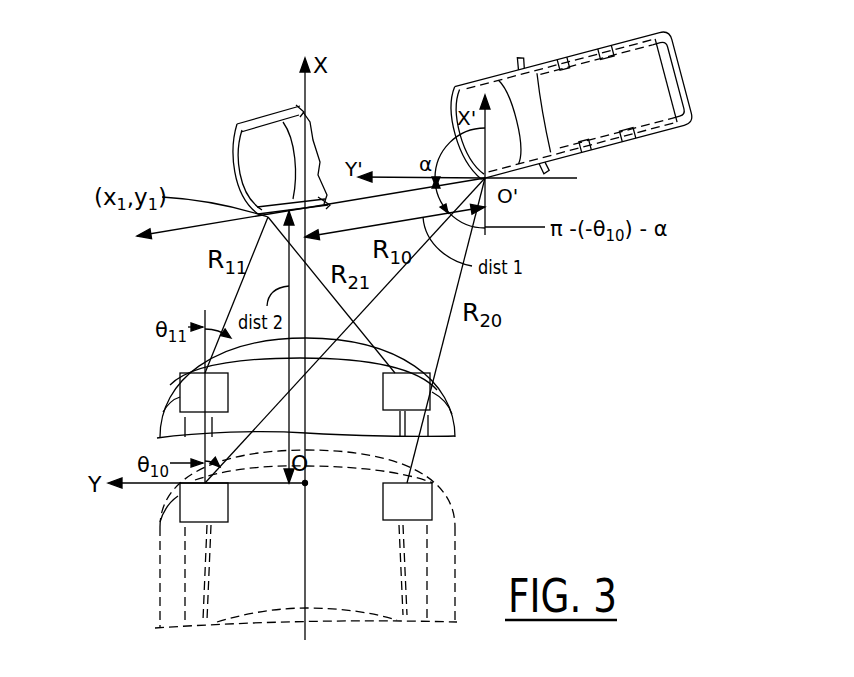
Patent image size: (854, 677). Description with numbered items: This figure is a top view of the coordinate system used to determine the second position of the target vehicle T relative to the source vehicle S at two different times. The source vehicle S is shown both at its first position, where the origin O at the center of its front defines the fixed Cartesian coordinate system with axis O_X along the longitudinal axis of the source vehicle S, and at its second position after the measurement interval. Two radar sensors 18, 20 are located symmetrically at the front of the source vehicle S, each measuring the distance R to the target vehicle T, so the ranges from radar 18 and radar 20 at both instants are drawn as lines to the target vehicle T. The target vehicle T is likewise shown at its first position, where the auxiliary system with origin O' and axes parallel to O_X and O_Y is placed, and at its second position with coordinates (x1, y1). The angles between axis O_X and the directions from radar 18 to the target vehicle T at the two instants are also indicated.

The radar sensor 18 is at (180, 386).
The radar sensor 20 is at (431, 381).
The source vehicle S is at (306, 483).
The target vehicle T is at (261, 118).